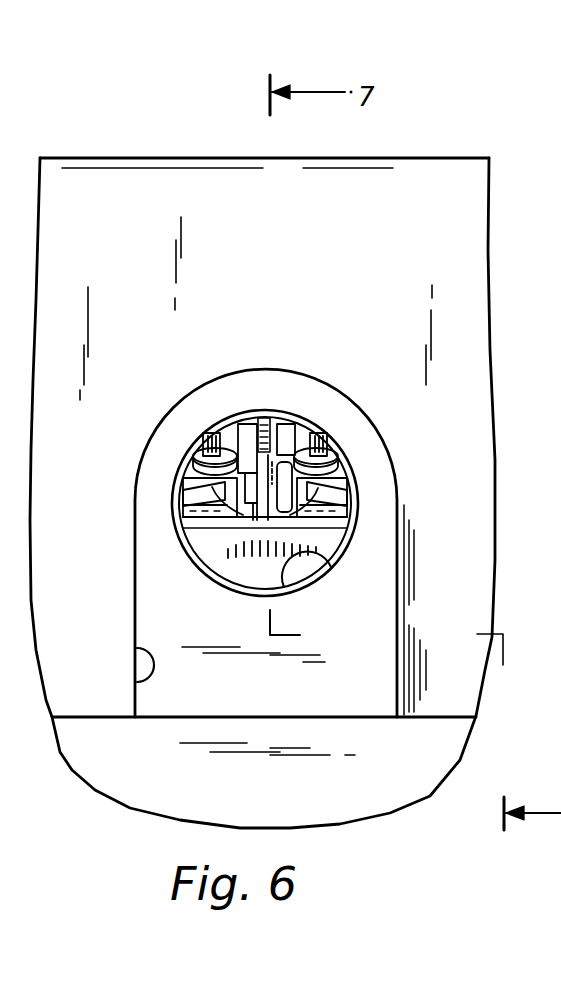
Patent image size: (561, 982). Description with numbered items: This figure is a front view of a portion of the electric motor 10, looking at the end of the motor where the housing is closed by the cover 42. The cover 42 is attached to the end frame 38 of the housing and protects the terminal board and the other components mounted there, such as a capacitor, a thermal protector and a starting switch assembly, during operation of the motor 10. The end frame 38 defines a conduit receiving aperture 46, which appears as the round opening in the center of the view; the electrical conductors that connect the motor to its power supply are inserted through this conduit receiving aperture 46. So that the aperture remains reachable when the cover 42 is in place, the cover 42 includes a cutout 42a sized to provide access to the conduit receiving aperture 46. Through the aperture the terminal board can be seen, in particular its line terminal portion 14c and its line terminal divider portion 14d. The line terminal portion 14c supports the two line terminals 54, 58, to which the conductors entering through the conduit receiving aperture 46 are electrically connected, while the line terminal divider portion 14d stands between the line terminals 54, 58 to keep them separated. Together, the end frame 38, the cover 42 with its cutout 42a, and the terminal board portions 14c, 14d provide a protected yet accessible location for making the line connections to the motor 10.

The electric motor 10 is at (147, 153).
The cover 42 is at (456, 177).
The cutout 42a is at (137, 651).
The end frame 38 is at (378, 642).
The conduit receiving aperture 46 is at (328, 564).
The line terminal portion 14c is at (250, 510).
The line terminal divider portion 14d is at (267, 423).
The line terminal 54 is at (186, 528).
The line terminal 58 is at (350, 510).